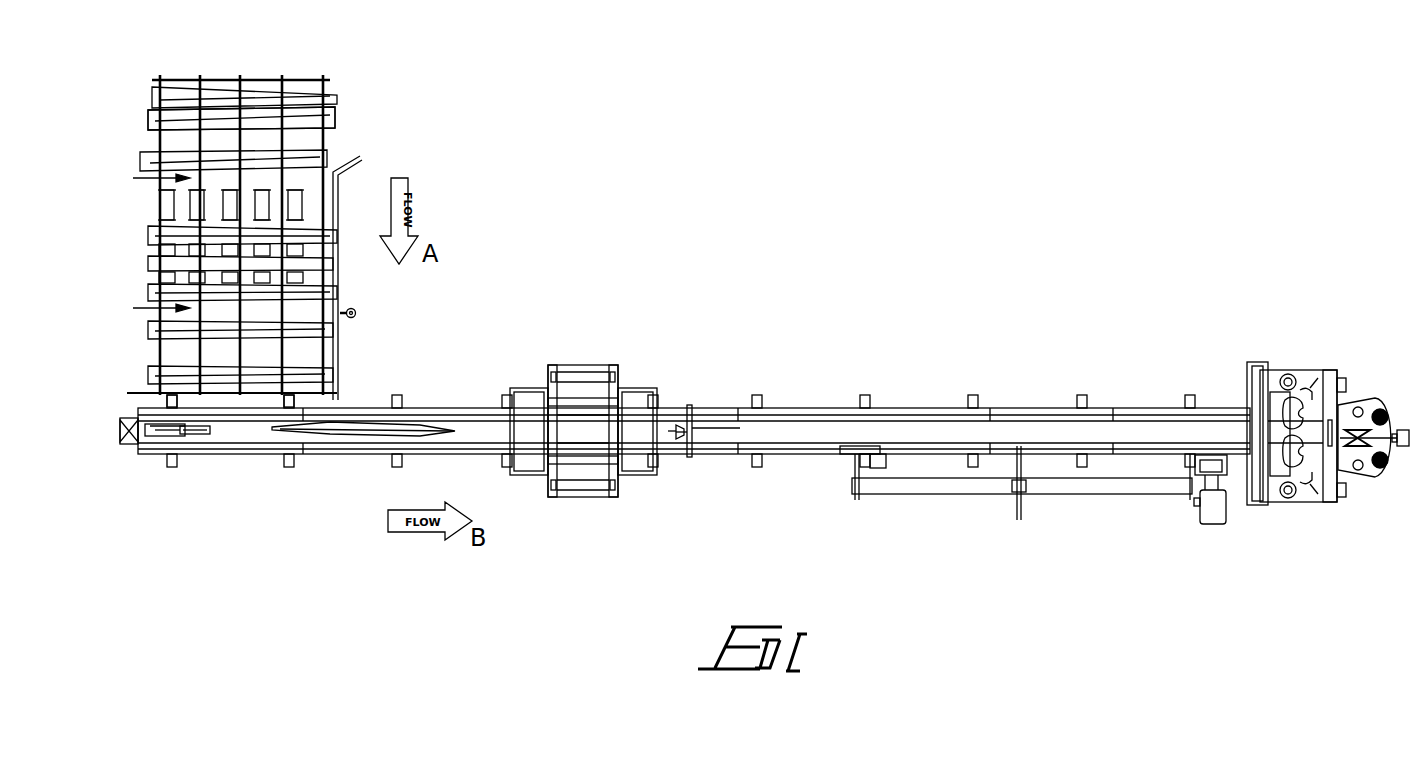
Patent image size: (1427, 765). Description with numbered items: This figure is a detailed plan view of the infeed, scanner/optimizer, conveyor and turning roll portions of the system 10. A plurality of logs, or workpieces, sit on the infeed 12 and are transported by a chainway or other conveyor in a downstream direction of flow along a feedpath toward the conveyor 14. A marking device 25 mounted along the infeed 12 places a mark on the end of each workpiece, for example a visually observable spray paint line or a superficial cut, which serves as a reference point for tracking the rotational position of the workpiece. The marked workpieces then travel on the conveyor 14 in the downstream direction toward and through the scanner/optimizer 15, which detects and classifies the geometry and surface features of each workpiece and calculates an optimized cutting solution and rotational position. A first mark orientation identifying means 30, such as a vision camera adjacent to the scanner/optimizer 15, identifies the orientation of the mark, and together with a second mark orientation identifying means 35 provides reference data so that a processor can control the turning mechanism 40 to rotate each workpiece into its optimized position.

The system 10 is at (686, 283).
The infeed 12 is at (240, 80).
The conveyor 14 is at (244, 452).
The scanner/optimizer 15 is at (586, 365).
The marking device 25 is at (352, 308).
The first mark orientation identifying means 30 is at (676, 440).
The second mark orientation identifying means 35 is at (1316, 416).
The turning mechanism 40 is at (1297, 368).